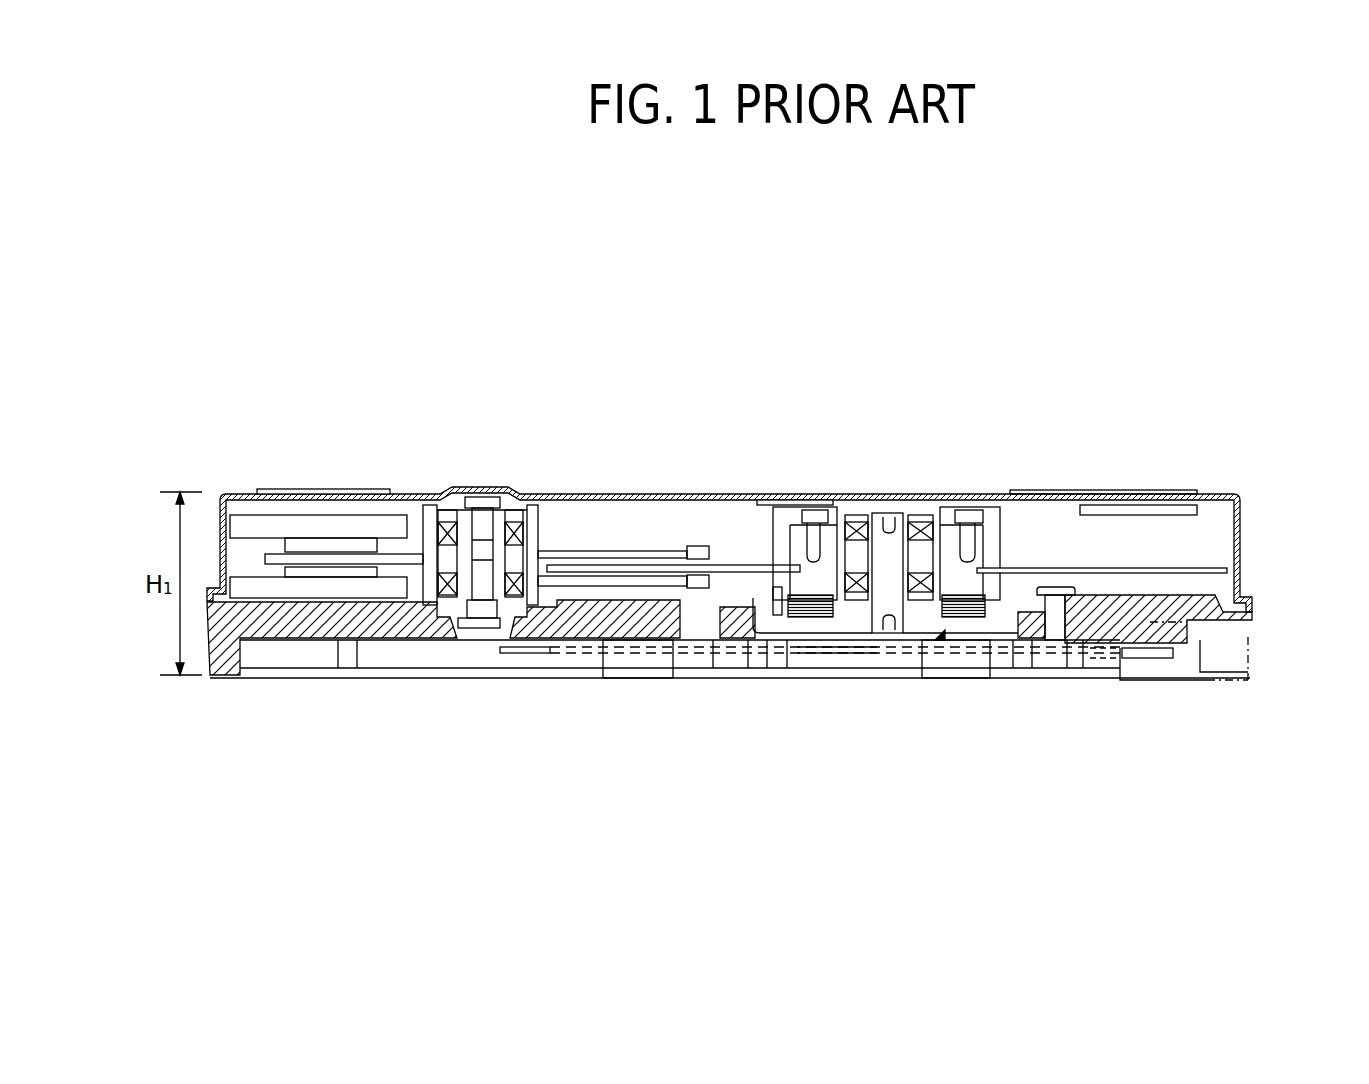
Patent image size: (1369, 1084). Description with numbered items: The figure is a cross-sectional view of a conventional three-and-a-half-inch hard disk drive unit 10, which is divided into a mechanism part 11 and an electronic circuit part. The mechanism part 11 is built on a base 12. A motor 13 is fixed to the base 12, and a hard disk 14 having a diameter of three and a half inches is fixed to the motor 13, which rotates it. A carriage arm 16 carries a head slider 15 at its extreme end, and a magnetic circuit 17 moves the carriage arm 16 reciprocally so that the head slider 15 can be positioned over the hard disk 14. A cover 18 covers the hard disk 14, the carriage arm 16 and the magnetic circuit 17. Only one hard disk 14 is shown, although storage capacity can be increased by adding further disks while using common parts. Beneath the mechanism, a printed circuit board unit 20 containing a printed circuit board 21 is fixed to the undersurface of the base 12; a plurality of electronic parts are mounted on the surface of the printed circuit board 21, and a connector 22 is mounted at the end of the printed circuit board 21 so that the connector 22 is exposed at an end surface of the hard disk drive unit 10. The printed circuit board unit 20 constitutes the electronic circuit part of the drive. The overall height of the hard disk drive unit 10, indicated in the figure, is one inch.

The hard disk drive unit 10 is at (1150, 389).
The mechanism part 11 is at (1238, 496).
The base 12 is at (300, 638).
The motor 13 is at (938, 641).
The hard disk 14 is at (1053, 565).
The head slider 15 is at (756, 580).
The carriage arm 16 is at (571, 530).
The magnetic circuit 17 is at (315, 503).
The cover 18 is at (257, 490).
The printed circuit board unit 20 is at (1143, 683).
The printed circuit board 21 is at (845, 657).
The connector 22 is at (1230, 682).